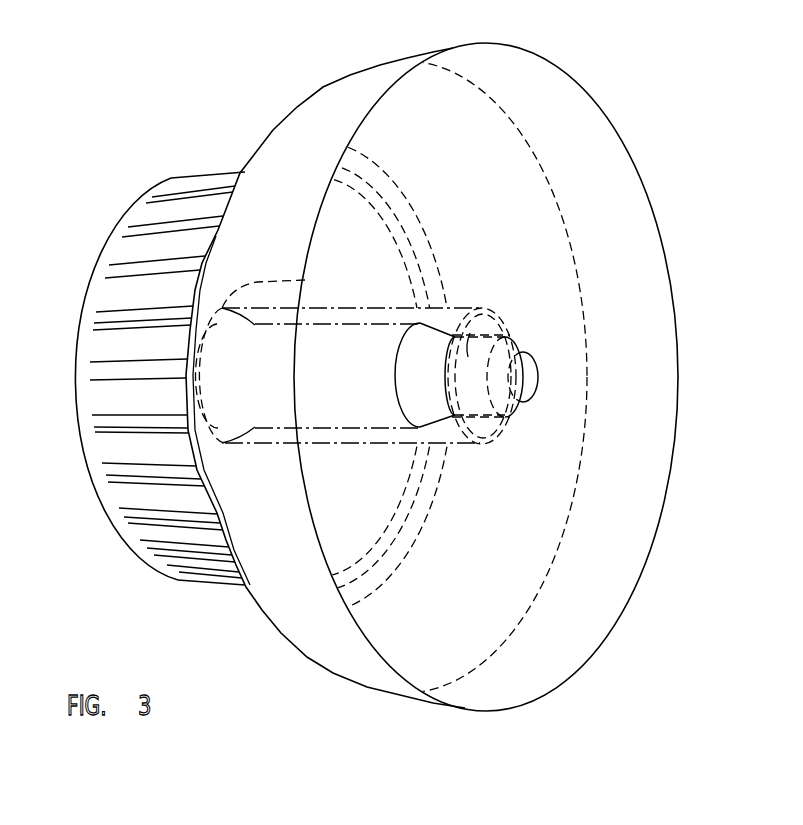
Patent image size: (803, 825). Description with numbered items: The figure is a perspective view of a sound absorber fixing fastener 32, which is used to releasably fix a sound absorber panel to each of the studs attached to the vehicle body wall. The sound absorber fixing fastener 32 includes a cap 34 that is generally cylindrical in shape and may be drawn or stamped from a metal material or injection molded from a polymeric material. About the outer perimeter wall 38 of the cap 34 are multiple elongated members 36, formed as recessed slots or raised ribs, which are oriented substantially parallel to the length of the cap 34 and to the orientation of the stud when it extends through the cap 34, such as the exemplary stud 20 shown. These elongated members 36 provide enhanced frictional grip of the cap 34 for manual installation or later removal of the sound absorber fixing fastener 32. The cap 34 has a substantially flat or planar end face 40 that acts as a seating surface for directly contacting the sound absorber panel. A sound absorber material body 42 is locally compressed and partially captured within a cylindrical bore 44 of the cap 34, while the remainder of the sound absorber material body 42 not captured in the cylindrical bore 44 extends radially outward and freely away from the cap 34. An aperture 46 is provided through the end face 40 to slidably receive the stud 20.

The stud 20 is at (487, 325).
The sound absorber fixing fastener 32 is at (633, 102).
The cap 34 is at (90, 392).
The elongated members 36 is at (145, 428).
The outer perimeter wall 38 is at (178, 189).
The end face 40 is at (100, 295).
The sound absorber material body 42 is at (351, 101).
The cylindrical bore 44 is at (357, 518).
The aperture 46 is at (305, 280).